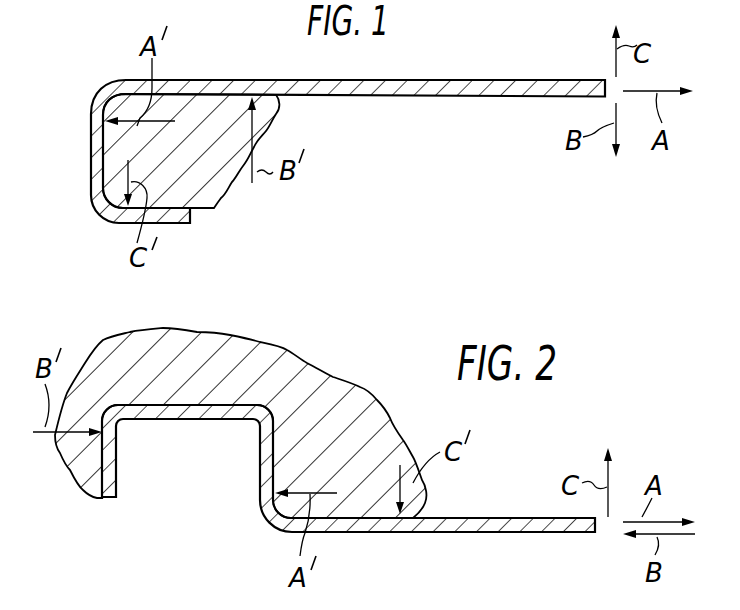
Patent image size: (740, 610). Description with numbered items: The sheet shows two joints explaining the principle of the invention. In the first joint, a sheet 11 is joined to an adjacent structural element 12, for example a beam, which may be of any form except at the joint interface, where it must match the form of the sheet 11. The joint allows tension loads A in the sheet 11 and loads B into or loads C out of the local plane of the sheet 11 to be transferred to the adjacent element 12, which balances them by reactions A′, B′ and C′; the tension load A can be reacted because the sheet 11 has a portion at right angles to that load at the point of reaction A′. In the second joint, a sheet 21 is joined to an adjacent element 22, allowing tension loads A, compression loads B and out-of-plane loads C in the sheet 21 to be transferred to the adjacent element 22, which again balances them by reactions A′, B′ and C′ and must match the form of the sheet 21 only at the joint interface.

In FIG. 1, the sheet 11 is at (433, 97).
In FIG. 1, the adjacent structural element 12 is at (223, 197).
In FIG. 2, the sheet 21 is at (488, 517).
In FIG. 2, the adjacent element 22 is at (360, 400).